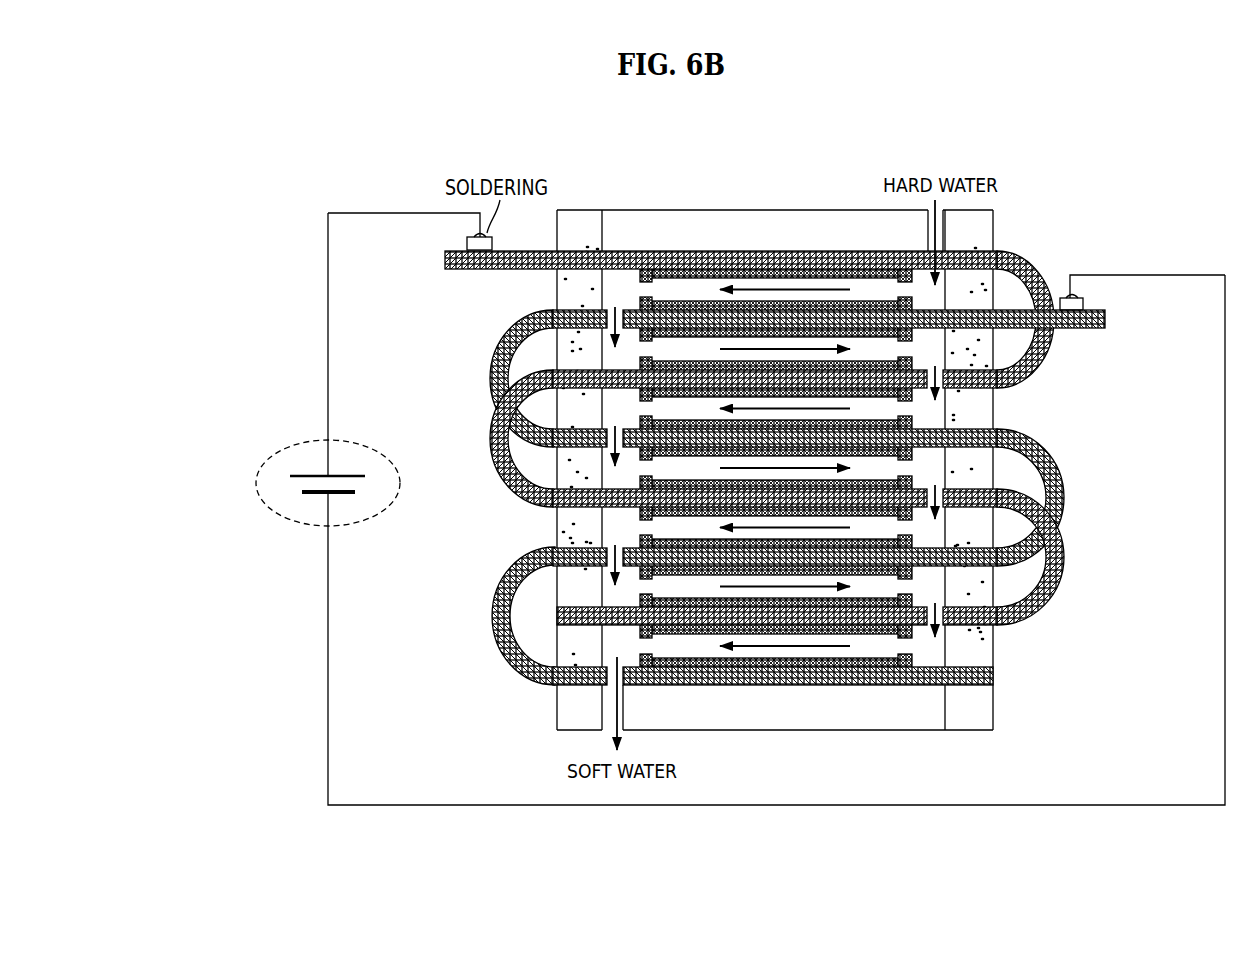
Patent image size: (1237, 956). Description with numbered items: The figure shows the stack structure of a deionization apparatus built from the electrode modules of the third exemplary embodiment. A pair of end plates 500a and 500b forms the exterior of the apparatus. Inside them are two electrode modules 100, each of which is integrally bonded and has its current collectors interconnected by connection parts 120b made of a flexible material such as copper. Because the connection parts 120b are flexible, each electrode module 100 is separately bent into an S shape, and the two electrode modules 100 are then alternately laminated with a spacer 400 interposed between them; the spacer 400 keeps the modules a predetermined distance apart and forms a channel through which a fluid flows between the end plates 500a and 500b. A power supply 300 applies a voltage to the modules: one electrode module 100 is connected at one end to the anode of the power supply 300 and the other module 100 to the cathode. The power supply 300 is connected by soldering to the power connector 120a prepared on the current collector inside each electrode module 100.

The electrode module 100 is at (485, 366).
The power connector 120a is at (467, 245).
The connection part 120b is at (1033, 269).
The power supply 300 is at (258, 483).
The spacer 400 is at (995, 647).
The end plate 500a is at (752, 210).
The end plate 500b is at (805, 730).